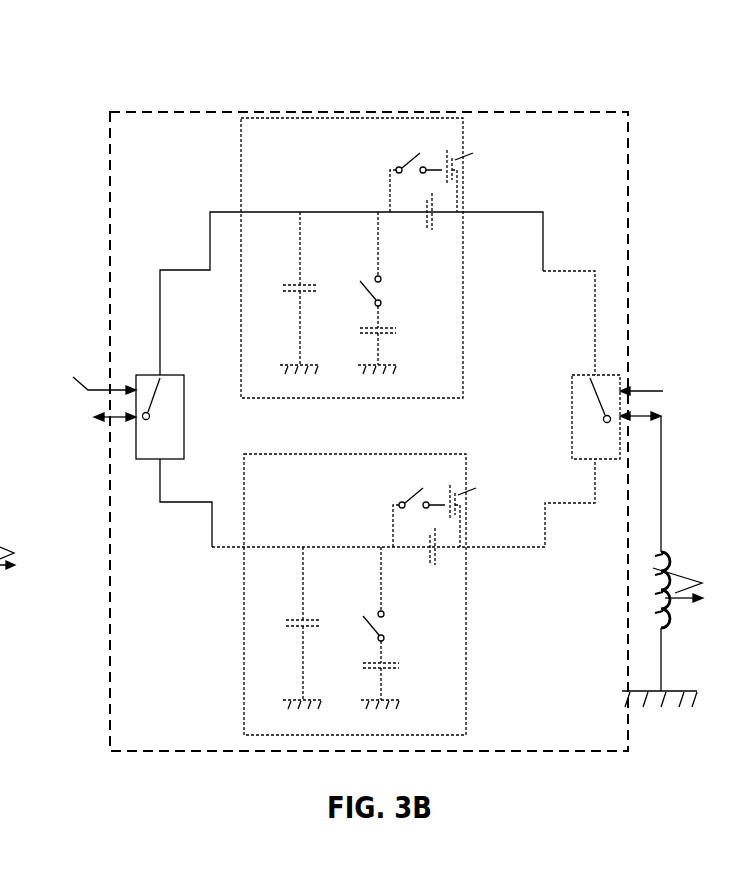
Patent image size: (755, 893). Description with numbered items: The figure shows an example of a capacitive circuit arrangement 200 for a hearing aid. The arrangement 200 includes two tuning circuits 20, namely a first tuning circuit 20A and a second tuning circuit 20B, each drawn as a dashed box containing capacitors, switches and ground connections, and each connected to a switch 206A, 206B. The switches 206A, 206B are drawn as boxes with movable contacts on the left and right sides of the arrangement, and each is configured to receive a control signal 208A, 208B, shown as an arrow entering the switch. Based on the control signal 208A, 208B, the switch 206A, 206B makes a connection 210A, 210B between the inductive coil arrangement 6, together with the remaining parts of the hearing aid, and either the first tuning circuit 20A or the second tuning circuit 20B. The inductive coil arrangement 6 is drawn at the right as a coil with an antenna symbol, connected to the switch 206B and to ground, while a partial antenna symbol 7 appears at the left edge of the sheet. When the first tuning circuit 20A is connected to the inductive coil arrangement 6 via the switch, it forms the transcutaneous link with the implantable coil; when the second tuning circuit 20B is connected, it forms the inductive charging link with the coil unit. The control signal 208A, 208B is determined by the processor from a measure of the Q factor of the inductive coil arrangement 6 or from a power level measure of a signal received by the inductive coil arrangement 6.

The capacitive circuit arrangement 200 is at (92, 125).
The tuning circuit 20 is at (290, 426).
The first tuning circuit 20A is at (238, 175).
The second tuning circuit 20B is at (233, 643).
The switch 206A is at (147, 372).
The switch 206B is at (605, 375).
The control signal 208A is at (77, 373).
The control signal 208B is at (640, 391).
The connection 210A is at (94, 417).
The connection 210B is at (663, 413).
The inductive coil arrangement 6 is at (648, 603).
The antenna 7 is at (5, 652).